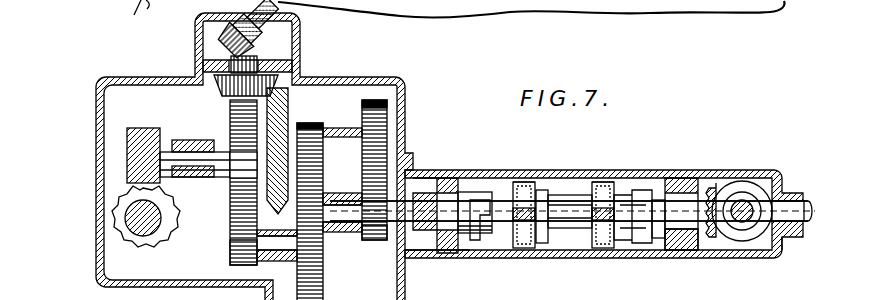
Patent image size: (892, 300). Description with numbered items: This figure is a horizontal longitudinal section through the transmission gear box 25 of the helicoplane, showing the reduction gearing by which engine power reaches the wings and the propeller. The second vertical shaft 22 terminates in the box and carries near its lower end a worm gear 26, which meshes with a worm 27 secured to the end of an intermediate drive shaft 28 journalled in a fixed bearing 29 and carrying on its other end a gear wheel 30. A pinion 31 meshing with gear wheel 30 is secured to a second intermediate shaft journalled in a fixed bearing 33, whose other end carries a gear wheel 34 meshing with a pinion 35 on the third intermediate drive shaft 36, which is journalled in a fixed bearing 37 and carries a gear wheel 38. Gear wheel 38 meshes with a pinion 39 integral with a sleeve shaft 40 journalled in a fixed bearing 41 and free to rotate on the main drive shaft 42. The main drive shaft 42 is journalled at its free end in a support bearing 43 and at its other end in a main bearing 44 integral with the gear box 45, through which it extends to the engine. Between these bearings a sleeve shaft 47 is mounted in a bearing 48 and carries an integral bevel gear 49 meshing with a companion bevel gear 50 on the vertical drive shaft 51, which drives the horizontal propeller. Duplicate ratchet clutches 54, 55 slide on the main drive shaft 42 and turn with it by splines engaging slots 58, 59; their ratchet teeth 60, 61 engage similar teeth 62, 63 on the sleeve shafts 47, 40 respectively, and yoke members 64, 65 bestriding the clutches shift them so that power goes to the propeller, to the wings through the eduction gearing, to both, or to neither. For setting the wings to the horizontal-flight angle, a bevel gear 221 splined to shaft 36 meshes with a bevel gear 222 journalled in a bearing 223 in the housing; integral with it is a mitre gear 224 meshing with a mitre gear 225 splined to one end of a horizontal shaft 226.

The second vertical shaft 22 is at (152, 215).
The transmission gear box 25 is at (97, 252).
The worm gear 26 is at (150, 243).
The worm 27 is at (127, 153).
The intermediate drive shaft 28 is at (192, 141).
The fixed bearing 29 is at (184, 178).
The gear wheel 30 is at (230, 194).
The pinion 31 is at (232, 258).
The fixed bearing 33 is at (280, 262).
The gear wheel 34 is at (323, 289).
The pinion 35 is at (310, 122).
The third intermediate drive shaft 36 is at (362, 126).
The fixed bearing 37 is at (342, 152).
The gear wheel 38 is at (386, 108).
The pinion 39 is at (375, 242).
The sleeve shaft 40 is at (418, 182).
The fixed bearing 41 is at (433, 260).
The main drive shaft 42 is at (816, 182).
The support bearing 43 is at (346, 194).
The main bearing 44 is at (788, 240).
The gear box 45 is at (660, 176).
The sleeve shaft 47 is at (672, 251).
The bearing 48 is at (688, 180).
The bevel gear 49 is at (714, 188).
The companion bevel gear 50 is at (741, 242).
The vertical drive shaft 51 is at (746, 206).
The ratchet clutch 54 is at (592, 250).
The ratchet clutch 55 is at (520, 250).
The slot 58 is at (574, 200).
The slot 59 is at (552, 205).
The ratchet teeth 60 is at (634, 210).
The ratchet teeth 61 is at (487, 192).
The teeth 62 is at (656, 240).
The teeth 63 is at (480, 240).
The yoke member 64 is at (602, 181).
The yoke member 65 is at (530, 181).
The bevel gear 221 is at (286, 112).
The bevel gear 222 is at (224, 86).
The bearing 223 is at (294, 78).
The mitre gear 224 is at (259, 40).
The mitre gear 225 is at (200, 38).
The horizontal shaft 226 is at (266, 12).